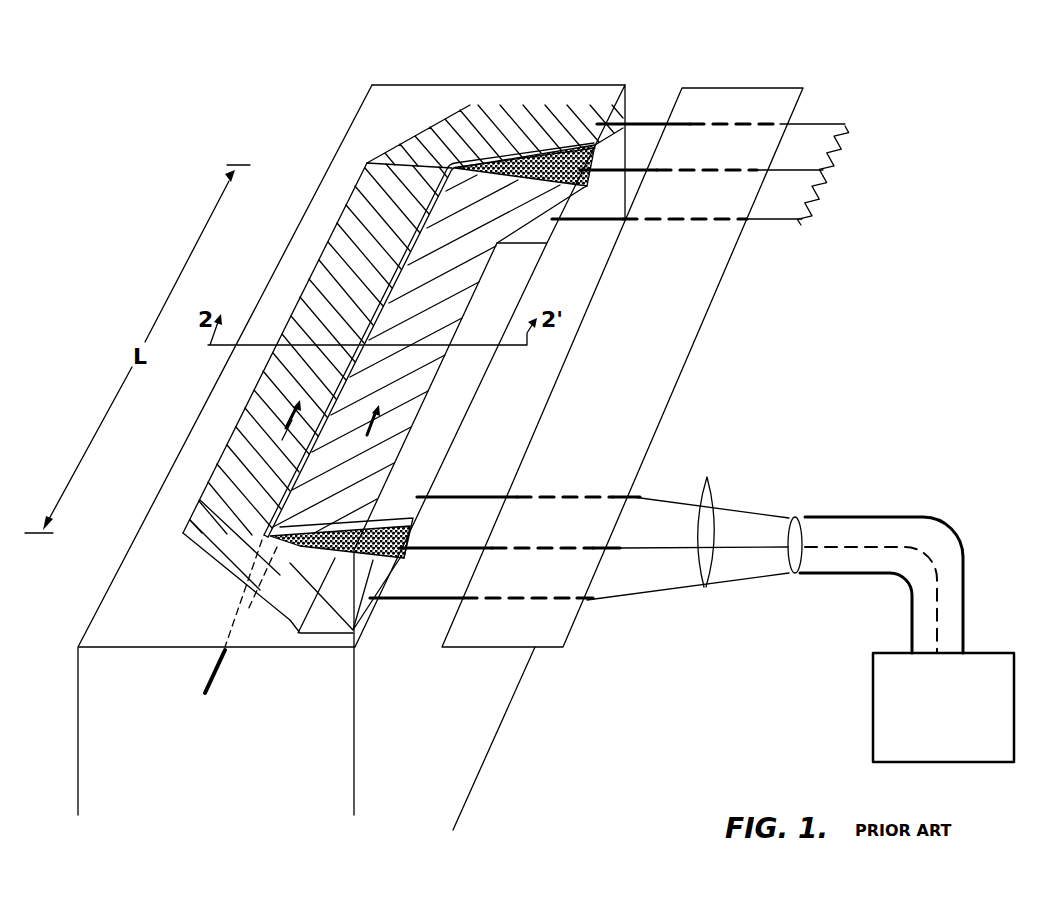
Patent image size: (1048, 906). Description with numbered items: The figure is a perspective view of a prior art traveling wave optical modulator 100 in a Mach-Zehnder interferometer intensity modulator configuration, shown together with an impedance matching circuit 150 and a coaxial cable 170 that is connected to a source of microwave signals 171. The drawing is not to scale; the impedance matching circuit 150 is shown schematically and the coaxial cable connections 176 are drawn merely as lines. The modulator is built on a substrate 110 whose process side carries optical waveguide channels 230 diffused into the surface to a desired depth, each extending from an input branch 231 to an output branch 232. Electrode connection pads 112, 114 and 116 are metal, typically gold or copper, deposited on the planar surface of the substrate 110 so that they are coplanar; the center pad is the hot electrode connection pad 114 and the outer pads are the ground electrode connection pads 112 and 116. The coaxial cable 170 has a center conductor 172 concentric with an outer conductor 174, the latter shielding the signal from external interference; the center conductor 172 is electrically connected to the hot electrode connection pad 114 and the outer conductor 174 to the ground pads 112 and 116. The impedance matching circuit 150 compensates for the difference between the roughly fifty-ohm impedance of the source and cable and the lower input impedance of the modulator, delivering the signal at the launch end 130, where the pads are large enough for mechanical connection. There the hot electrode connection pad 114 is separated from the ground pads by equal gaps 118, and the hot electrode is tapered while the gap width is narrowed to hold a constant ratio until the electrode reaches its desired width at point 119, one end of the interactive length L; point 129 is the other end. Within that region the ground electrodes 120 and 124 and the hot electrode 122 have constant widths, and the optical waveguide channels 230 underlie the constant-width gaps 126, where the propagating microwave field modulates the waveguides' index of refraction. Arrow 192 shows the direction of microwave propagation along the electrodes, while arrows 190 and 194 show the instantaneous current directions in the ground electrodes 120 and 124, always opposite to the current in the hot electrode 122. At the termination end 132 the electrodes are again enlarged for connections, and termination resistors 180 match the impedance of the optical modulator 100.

The traveling wave optical modulator 100 is at (376, 50).
The substrate 110 is at (405, 95).
The input branch 231 is at (493, 84).
The ground electrode connection pad 112 is at (493, 112).
The hot electrode connection pad 114 is at (527, 152).
The ground electrode connection pad 116 is at (578, 140).
The gaps 118 is at (350, 643).
The point 119 is at (252, 542).
The ground electrode 120 is at (378, 242).
The hot electrode 122 is at (400, 268).
The ground electrode 124 is at (430, 302).
The gaps 126 is at (375, 325).
The point 129 is at (438, 162).
The launch end 130 is at (405, 563).
The termination end 132 is at (590, 182).
The impedance matching circuit 150 is at (751, 80).
The coaxial cable 170 is at (913, 497).
The source of microwave signals 171 is at (990, 653).
The center conductor 172 is at (785, 575).
The outer conductor 174 is at (800, 520).
The coaxial cable connections 176 is at (710, 478).
The termination resistors 180 is at (845, 152).
The arrow 190 is at (310, 395).
The arrow 192 is at (323, 410).
The arrow 194 is at (385, 395).
The optical waveguide channels 230 is at (238, 593).
The output branch 232 is at (214, 672).